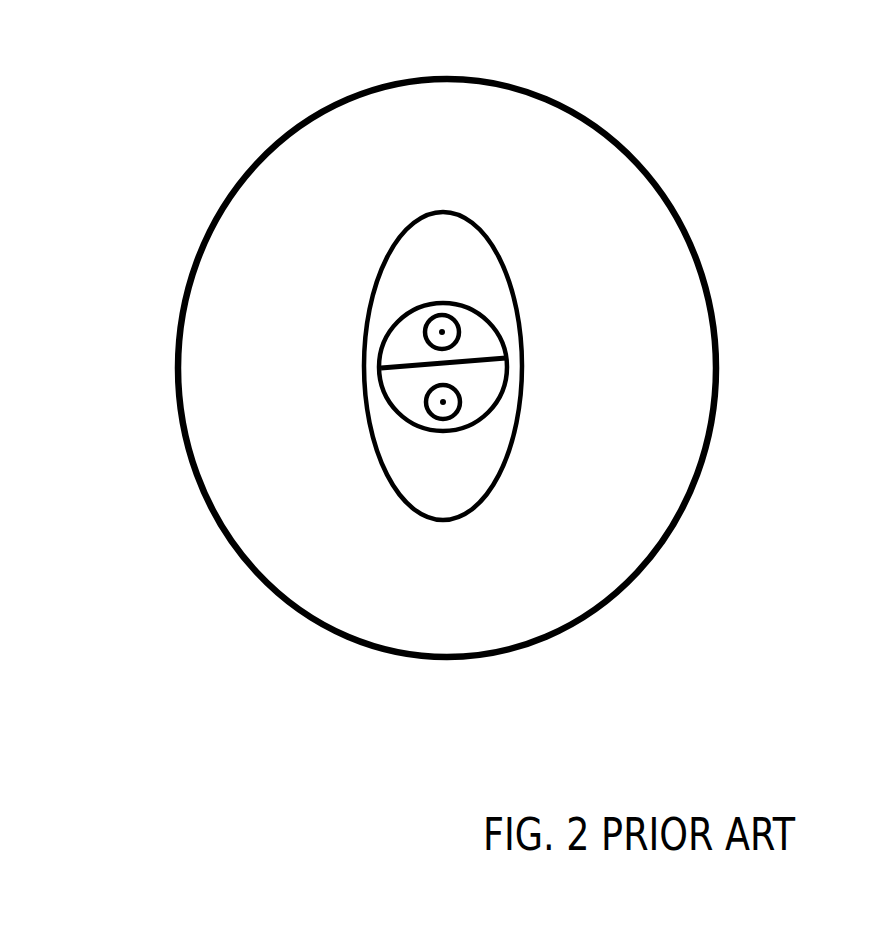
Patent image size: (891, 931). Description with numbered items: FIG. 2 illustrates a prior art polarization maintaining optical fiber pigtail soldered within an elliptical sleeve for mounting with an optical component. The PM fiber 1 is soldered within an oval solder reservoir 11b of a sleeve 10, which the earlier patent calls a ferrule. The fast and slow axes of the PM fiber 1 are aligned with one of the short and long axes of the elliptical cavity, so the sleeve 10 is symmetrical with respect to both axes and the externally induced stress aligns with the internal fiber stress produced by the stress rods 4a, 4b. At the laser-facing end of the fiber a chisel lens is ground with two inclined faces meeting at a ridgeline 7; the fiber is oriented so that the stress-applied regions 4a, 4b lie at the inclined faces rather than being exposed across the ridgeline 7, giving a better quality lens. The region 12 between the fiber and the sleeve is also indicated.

The PM fiber 1 is at (398, 352).
The stress rod 4a is at (433, 312).
The stress rod 4b is at (432, 412).
The ridgeline 7 is at (503, 348).
The sleeve 10 is at (645, 278).
The oval solder reservoir 11b is at (490, 237).
The gap region 12 is at (463, 453).